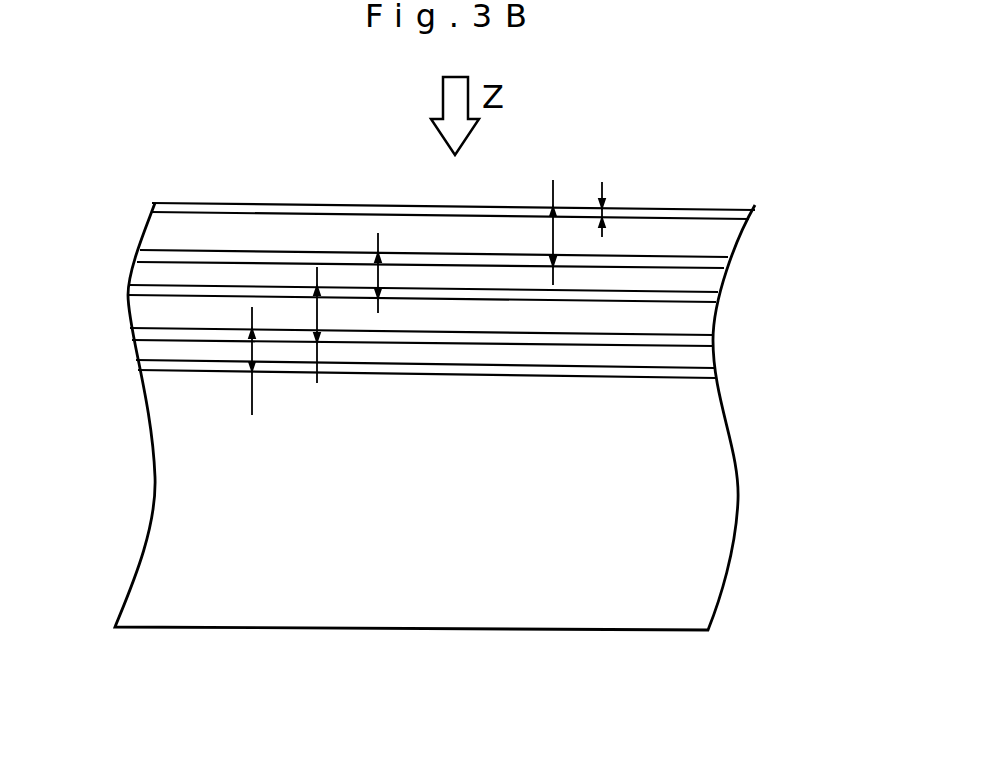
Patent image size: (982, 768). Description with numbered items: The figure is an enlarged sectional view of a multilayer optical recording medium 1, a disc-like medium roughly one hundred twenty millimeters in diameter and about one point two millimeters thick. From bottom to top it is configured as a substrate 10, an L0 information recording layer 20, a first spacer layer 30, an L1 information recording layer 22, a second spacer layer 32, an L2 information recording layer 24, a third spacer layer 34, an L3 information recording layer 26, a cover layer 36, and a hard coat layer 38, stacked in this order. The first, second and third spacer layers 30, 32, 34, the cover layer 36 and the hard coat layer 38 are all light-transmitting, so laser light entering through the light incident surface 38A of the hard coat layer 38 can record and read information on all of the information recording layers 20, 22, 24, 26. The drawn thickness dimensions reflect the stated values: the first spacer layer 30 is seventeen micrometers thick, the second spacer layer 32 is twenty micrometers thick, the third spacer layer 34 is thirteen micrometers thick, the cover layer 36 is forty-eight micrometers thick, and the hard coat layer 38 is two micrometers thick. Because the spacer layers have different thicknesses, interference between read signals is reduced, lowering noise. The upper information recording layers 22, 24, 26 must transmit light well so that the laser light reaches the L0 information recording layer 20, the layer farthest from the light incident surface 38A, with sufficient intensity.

The multilayer optical recording medium 1 is at (733, 170).
The substrate 10 is at (723, 550).
The L0 information recording layer 20 is at (712, 377).
The L1 information recording layer 22 is at (703, 342).
The L2 information recording layer 24 is at (707, 300).
The L3 information recording layer 26 is at (718, 265).
The first spacer layer 30 is at (147, 352).
The second spacer layer 32 is at (142, 311).
The third spacer layer 34 is at (148, 268).
The cover layer 36 is at (157, 233).
The hard coat layer 38 is at (152, 203).
The light incident surface 38A is at (207, 203).